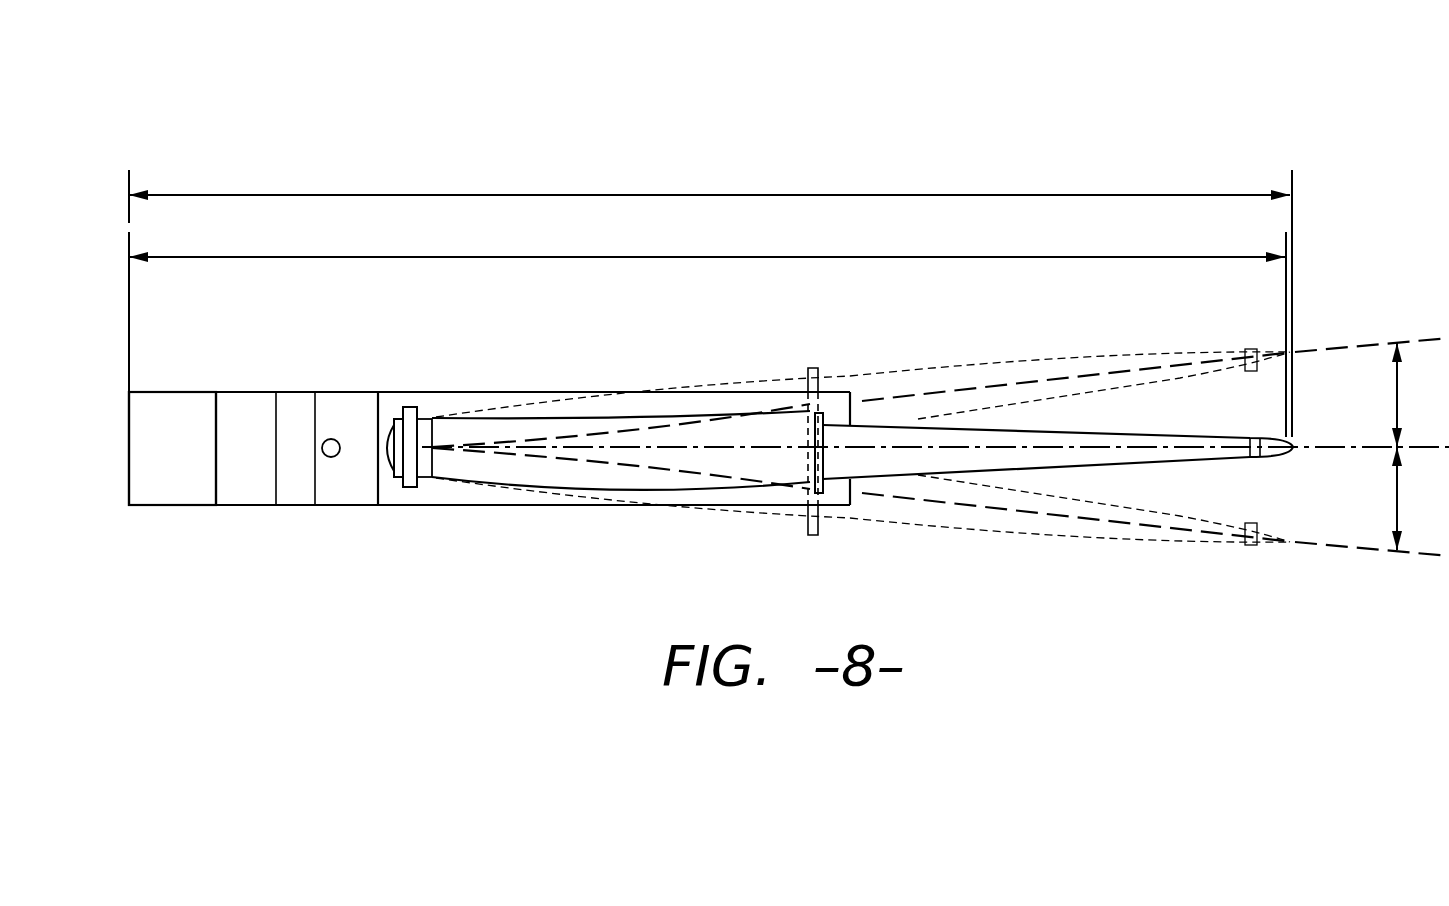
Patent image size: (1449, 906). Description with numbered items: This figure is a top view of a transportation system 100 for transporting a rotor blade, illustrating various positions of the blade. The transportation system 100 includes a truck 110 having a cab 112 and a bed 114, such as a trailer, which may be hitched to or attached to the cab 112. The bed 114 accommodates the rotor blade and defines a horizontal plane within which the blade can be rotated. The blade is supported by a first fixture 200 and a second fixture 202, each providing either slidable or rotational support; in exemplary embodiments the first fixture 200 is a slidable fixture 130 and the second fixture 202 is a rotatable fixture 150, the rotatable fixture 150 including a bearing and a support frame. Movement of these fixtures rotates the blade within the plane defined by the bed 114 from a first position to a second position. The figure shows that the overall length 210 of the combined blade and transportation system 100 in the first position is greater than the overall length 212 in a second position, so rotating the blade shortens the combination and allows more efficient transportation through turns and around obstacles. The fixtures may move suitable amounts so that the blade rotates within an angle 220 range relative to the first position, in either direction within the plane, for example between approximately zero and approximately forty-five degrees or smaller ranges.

The transportation system 100 is at (434, 140).
The truck 110 is at (291, 523).
The cab 112 is at (173, 507).
The bed 114 is at (460, 507).
The slidable fixture 130 is at (803, 410).
The rotatable fixture 150 is at (408, 407).
The first fixture 200 is at (833, 390).
The second fixture 202 is at (430, 407).
The overall length in the first position 210 is at (941, 195).
The overall length in the second position 212 is at (1034, 257).
The angle 220 is at (1395, 390).